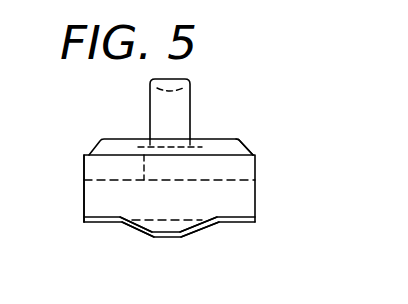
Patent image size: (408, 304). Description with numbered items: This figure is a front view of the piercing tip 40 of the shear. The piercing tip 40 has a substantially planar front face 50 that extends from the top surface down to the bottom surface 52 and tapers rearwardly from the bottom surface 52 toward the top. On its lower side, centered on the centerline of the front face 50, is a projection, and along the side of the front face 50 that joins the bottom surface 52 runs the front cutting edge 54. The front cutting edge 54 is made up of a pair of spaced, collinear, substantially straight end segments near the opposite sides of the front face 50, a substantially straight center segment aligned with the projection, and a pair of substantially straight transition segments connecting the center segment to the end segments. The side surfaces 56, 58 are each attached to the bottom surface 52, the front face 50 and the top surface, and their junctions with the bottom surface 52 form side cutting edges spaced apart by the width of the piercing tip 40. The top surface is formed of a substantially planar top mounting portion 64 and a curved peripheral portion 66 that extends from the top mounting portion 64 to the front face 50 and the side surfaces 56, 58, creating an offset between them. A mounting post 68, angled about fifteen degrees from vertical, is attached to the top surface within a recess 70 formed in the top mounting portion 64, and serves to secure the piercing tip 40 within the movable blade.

The piercing tip 40 is at (308, 112).
The front face 50 is at (211, 249).
The bottom surface 52 is at (135, 227).
The front cutting edge 54 is at (210, 227).
The side surface 56 is at (255, 167).
The side surface 58 is at (83, 182).
The top mounting portion 64 is at (220, 139).
The curved peripheral portion 66 is at (235, 148).
The mounting post 68 is at (182, 102).
The recess 70 is at (143, 140).